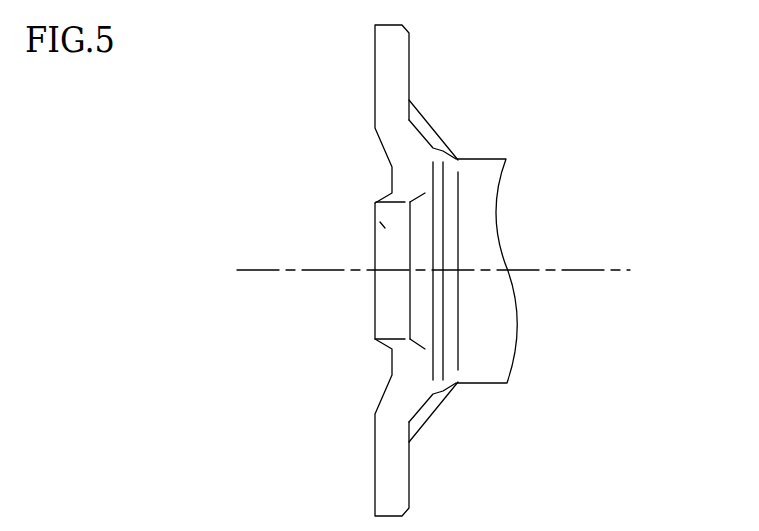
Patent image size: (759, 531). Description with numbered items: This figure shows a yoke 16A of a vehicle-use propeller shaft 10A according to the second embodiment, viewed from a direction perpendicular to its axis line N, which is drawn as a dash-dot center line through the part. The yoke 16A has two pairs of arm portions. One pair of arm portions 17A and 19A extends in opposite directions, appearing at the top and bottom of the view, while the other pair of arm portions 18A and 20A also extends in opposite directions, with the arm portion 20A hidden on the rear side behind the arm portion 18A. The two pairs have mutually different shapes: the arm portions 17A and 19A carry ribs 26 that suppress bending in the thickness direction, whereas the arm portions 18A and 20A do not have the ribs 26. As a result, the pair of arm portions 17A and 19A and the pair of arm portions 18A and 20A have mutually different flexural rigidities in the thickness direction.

The yoke 16A is at (490, 270).
The propeller shaft 10A is at (490, 270).
The arm portion 17A is at (409, 60).
The arm portion 19A is at (409, 482).
The arm portion 18A is at (385, 312).
The arm portion 20A is at (373, 217).
The rib 26 is at (432, 118).
The rotation axis N is at (610, 270).